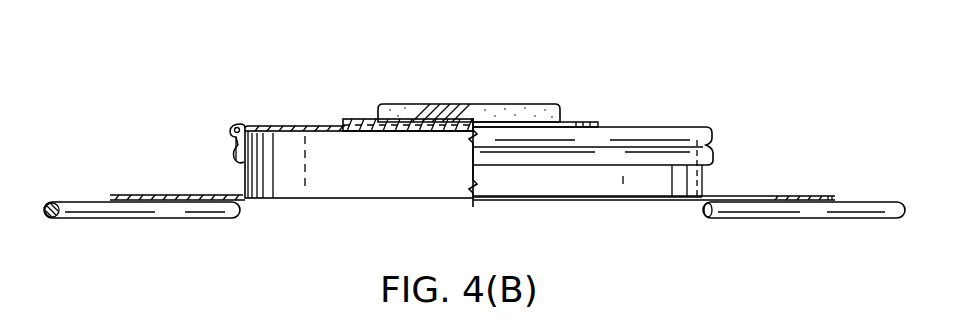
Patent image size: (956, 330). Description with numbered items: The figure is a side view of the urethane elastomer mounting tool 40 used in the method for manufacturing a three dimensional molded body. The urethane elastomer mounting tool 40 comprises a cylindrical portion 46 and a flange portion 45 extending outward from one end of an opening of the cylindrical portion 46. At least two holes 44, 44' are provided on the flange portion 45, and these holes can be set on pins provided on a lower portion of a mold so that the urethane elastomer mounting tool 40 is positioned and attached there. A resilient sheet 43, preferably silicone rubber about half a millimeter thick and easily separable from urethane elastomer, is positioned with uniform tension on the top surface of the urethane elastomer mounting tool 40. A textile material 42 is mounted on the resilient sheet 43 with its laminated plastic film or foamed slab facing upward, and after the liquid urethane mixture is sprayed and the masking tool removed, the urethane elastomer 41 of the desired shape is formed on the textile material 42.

The urethane elastomer mounting tool 40 is at (768, 155).
The urethane elastomer 41 is at (512, 104).
The textile material 42 is at (367, 119).
The resilient sheet 43 is at (300, 128).
The hole 44 is at (804, 170).
The hole 44' is at (144, 159).
The flange portion 45 is at (725, 195).
The cylindrical portion 46 is at (243, 178).